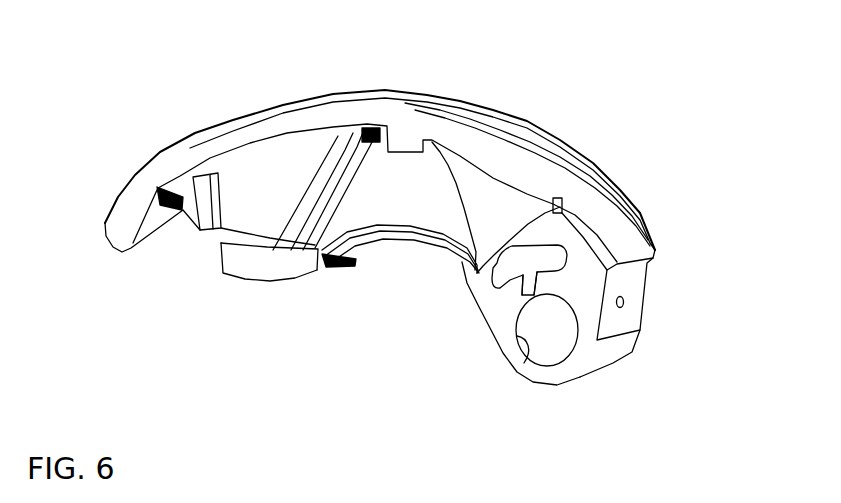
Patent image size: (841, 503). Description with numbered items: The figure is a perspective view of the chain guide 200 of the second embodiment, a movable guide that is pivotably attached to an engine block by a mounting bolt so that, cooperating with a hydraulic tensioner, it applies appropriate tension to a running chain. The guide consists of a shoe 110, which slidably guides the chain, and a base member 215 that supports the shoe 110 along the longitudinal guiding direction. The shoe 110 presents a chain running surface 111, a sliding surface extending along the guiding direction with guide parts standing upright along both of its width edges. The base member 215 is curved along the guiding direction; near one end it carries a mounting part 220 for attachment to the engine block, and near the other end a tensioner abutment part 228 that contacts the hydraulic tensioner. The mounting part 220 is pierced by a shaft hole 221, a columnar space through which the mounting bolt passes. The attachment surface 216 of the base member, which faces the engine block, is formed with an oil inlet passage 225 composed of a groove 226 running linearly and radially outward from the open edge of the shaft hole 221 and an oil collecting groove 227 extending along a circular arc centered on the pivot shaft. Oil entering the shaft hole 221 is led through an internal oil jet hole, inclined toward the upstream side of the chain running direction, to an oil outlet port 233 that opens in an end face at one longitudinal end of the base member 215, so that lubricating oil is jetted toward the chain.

The chain guide 200 is at (380, 126).
The shoe 110 is at (361, 140).
The chain running surface 111 is at (607, 223).
The base member 215 is at (326, 134).
The attachment surface 216 is at (527, 147).
The mounting part 220 is at (598, 429).
The shaft hole 221 is at (511, 379).
The oil inlet passage 225 is at (451, 305).
The groove 226 is at (466, 319).
The oil collecting groove 227 is at (472, 285).
The tensioner abutment part 228 is at (266, 308).
The oil outlet port 233 is at (694, 304).